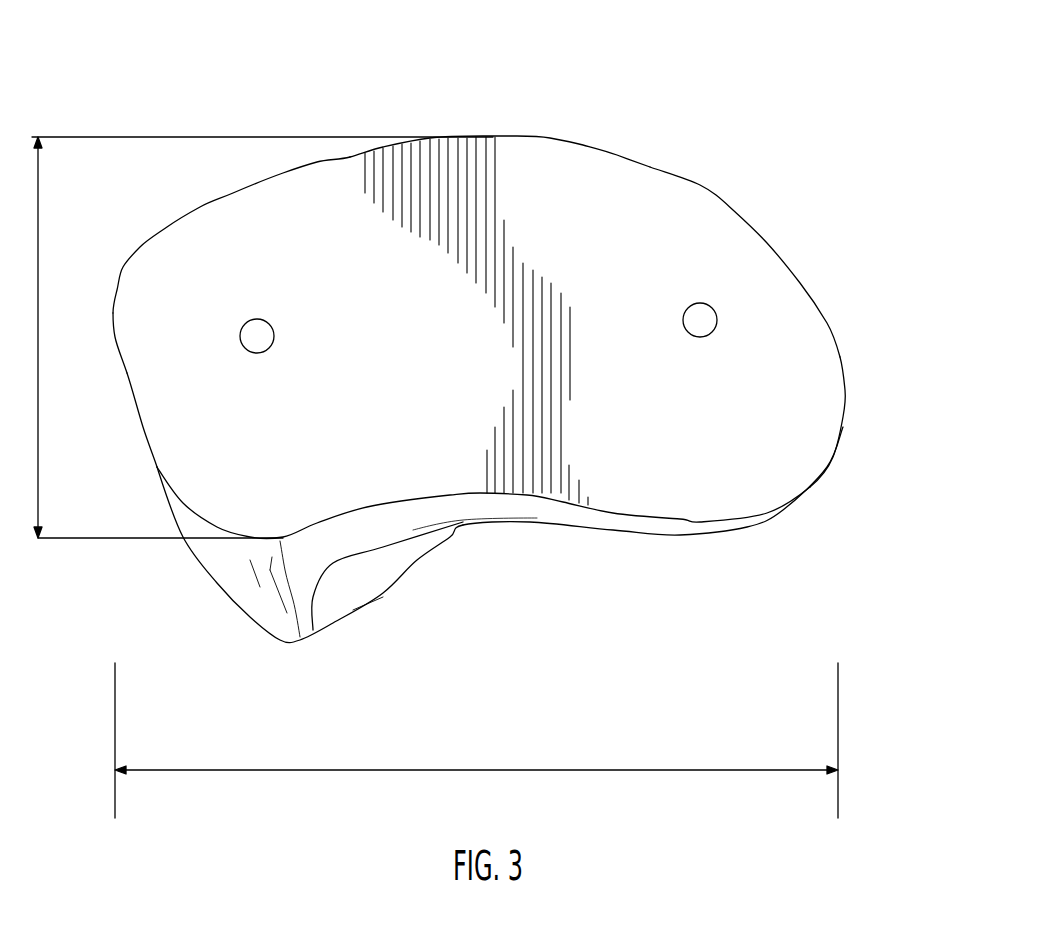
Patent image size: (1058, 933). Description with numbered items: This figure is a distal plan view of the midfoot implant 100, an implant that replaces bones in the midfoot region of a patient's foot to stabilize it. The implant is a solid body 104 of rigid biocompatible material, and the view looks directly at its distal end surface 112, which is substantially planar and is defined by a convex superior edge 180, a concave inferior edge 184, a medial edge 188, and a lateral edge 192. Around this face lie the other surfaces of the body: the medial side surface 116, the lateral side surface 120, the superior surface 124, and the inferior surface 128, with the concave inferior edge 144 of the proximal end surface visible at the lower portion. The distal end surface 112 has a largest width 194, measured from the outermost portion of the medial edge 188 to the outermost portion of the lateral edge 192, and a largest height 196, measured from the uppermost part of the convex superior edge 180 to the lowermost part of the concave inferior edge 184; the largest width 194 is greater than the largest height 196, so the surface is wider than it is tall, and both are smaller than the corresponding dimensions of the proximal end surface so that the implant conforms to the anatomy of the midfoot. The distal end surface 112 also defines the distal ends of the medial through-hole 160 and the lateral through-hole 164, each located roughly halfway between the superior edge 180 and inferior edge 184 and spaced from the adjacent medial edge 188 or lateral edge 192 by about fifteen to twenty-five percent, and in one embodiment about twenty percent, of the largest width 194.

The midfoot implant 100 is at (209, 121).
The solid body 104 is at (152, 255).
The distal end surface 112 is at (654, 482).
The medial side surface 116 is at (855, 386).
The lateral side surface 120 is at (134, 433).
The superior surface 124 is at (514, 128).
The inferior surface 128 is at (460, 530).
The concave inferior edge 144 is at (420, 560).
The medial through-hole 160 is at (717, 323).
The lateral through-hole 164 is at (275, 340).
The convex superior edge 180 is at (432, 137).
The concave inferior edge 184 is at (527, 480).
The medial edge 188 is at (838, 360).
The lateral edge 192 is at (127, 375).
The largest width 194 is at (305, 768).
The largest height 196 is at (40, 193).